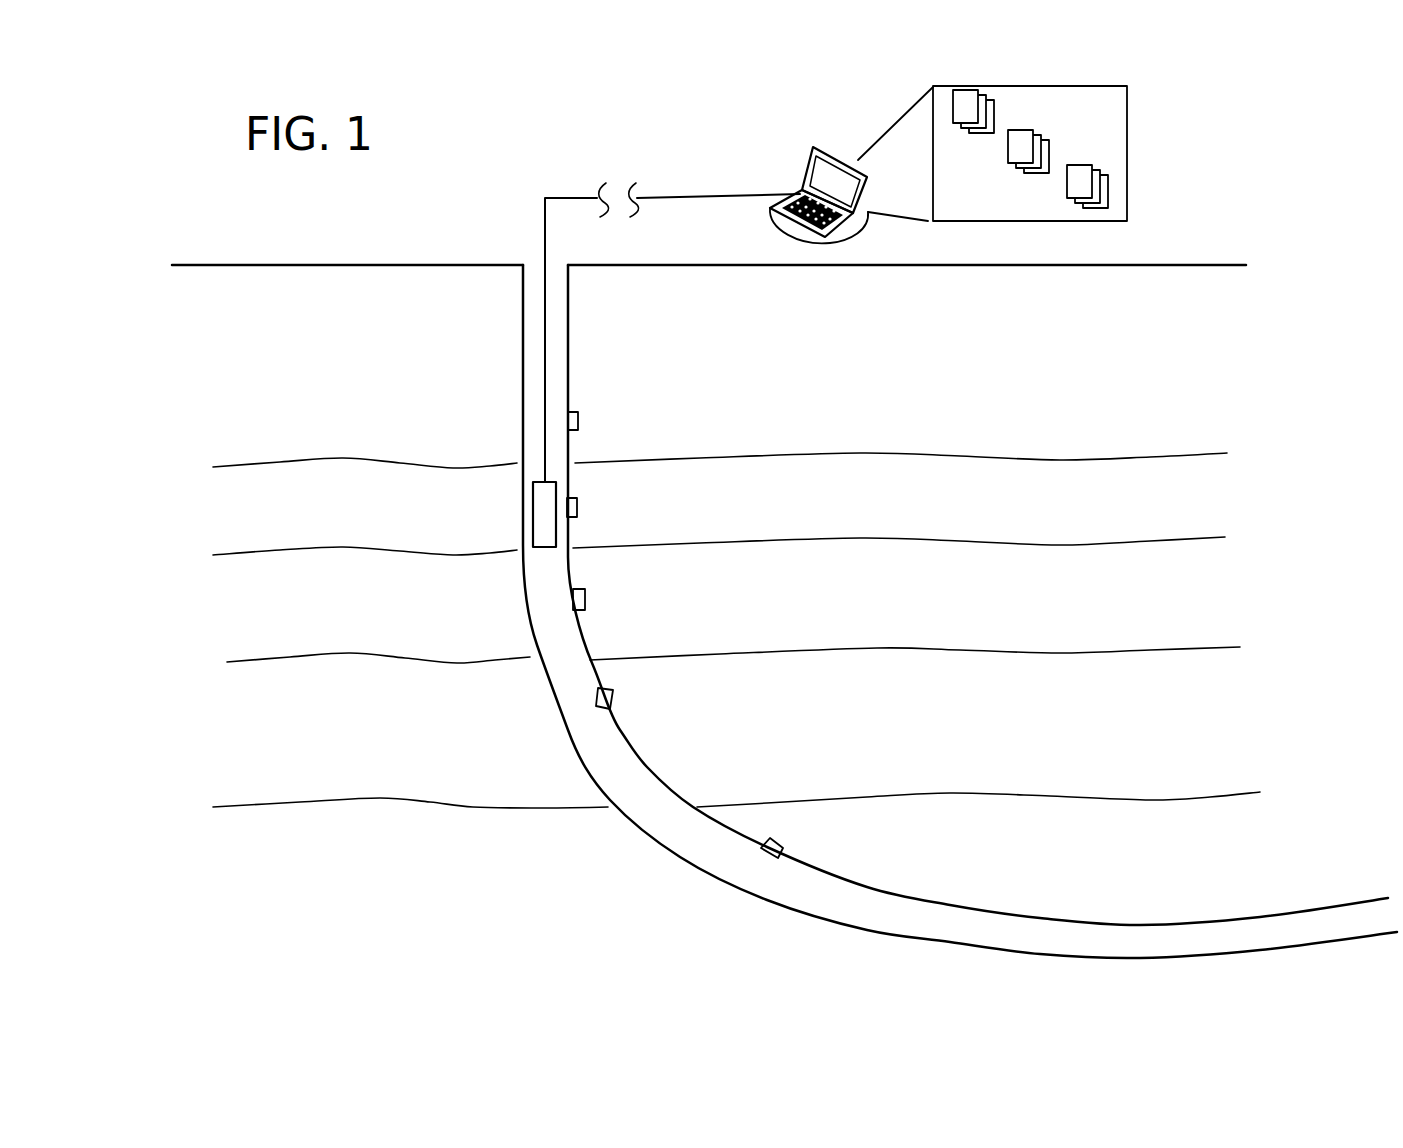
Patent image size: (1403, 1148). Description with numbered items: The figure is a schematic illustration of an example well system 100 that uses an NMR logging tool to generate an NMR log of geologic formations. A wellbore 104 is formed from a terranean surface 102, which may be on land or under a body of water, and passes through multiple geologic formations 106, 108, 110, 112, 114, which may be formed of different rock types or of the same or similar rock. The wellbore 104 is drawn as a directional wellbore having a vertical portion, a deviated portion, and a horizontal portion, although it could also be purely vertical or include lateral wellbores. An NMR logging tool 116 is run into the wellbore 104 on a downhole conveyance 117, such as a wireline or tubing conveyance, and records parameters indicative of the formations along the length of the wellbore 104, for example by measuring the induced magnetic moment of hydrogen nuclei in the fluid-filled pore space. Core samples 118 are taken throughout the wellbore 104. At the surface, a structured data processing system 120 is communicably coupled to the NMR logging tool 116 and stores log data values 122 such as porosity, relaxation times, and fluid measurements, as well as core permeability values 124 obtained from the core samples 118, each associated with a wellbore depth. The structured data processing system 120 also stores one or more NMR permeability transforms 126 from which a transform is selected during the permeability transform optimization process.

The well system 100 is at (1298, 158).
The terranean surface 102 is at (1165, 263).
The wellbore 104 is at (568, 383).
The geologic formation 106 is at (968, 382).
The geologic formation 108 is at (962, 511).
The geologic formation 110 is at (963, 611).
The geologic formation 112 is at (968, 734).
The geologic formation 114 is at (1170, 861).
The NMR logging tool 116 is at (530, 522).
The downhole conveyance 117 is at (547, 343).
The core samples 118 is at (578, 423).
The structured data processing system 120 is at (828, 145).
The log data values 122 is at (963, 100).
The core permeability values 124 is at (1023, 135).
The NMR permeability transforms 126 is at (1083, 173).